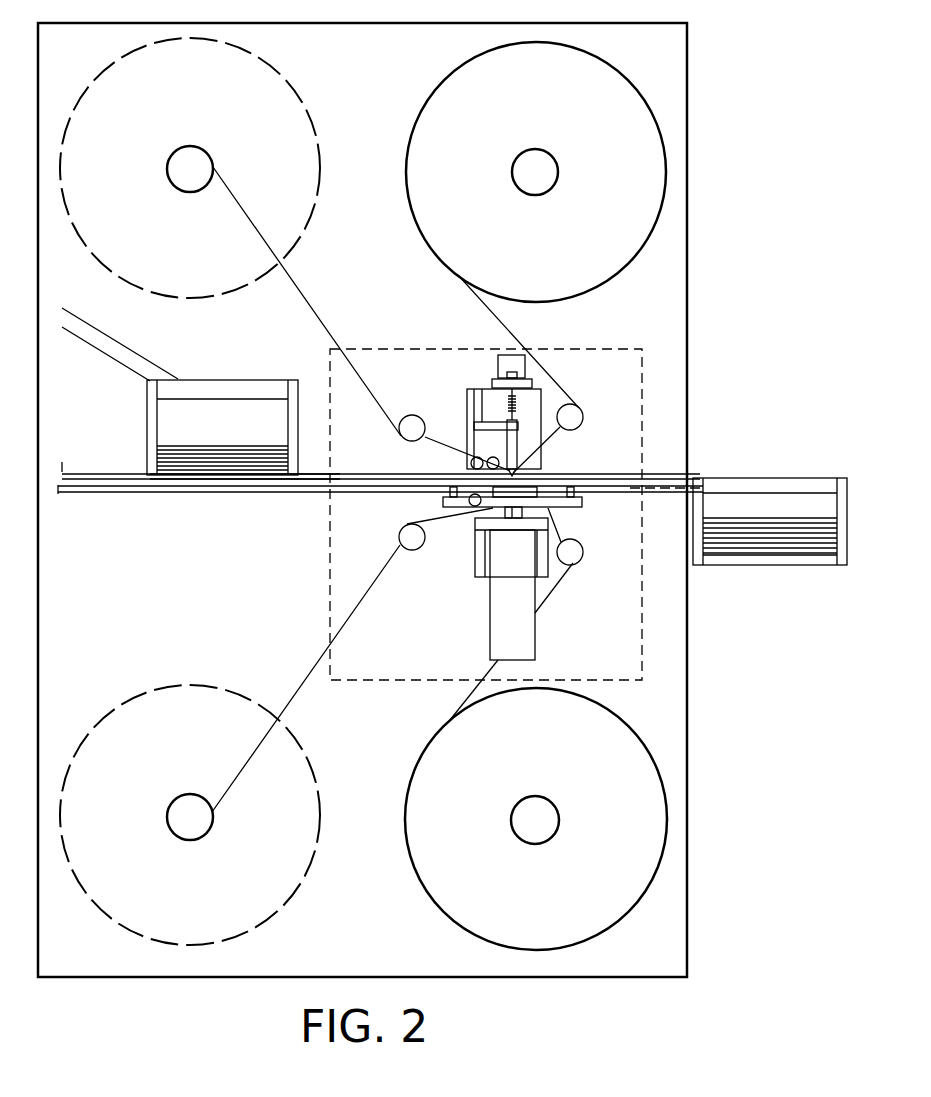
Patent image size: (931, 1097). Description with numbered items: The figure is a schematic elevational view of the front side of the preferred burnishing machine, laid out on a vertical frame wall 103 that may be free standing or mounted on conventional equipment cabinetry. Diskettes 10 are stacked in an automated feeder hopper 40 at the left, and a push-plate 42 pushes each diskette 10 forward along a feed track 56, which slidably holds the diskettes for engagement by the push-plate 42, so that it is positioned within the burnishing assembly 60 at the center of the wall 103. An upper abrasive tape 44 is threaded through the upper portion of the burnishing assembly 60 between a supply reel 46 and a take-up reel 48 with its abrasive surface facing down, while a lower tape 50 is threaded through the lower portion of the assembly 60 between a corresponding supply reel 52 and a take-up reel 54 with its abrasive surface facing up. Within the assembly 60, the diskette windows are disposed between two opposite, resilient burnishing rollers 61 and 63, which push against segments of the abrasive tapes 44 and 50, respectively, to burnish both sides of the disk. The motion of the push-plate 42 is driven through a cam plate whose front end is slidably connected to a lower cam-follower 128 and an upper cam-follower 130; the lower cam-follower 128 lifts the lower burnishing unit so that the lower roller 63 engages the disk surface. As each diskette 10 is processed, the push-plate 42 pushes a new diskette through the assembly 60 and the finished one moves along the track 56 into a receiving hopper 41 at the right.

The vertical frame wall 103 is at (672, 63).
The supply reel 46 is at (447, 90).
The take-up reel 48 is at (298, 123).
The upper abrasive tape 44 is at (303, 293).
The automated feeder hopper 40 is at (193, 393).
The diskette 10 is at (177, 443).
The burnishing assembly 60 is at (642, 412).
The receiving hopper 41 is at (793, 497).
The upper cam-follower 130 is at (478, 468).
The upper burnishing roller 61 is at (540, 460).
The lower cam-follower 128 is at (480, 507).
The lower burnishing roller 63 is at (553, 508).
The push-plate 42 is at (120, 482).
The feed track 56 is at (307, 485).
The lower abrasive tape 50 is at (298, 690).
The take-up reel 54 is at (298, 858).
The supply reel 52 is at (447, 893).